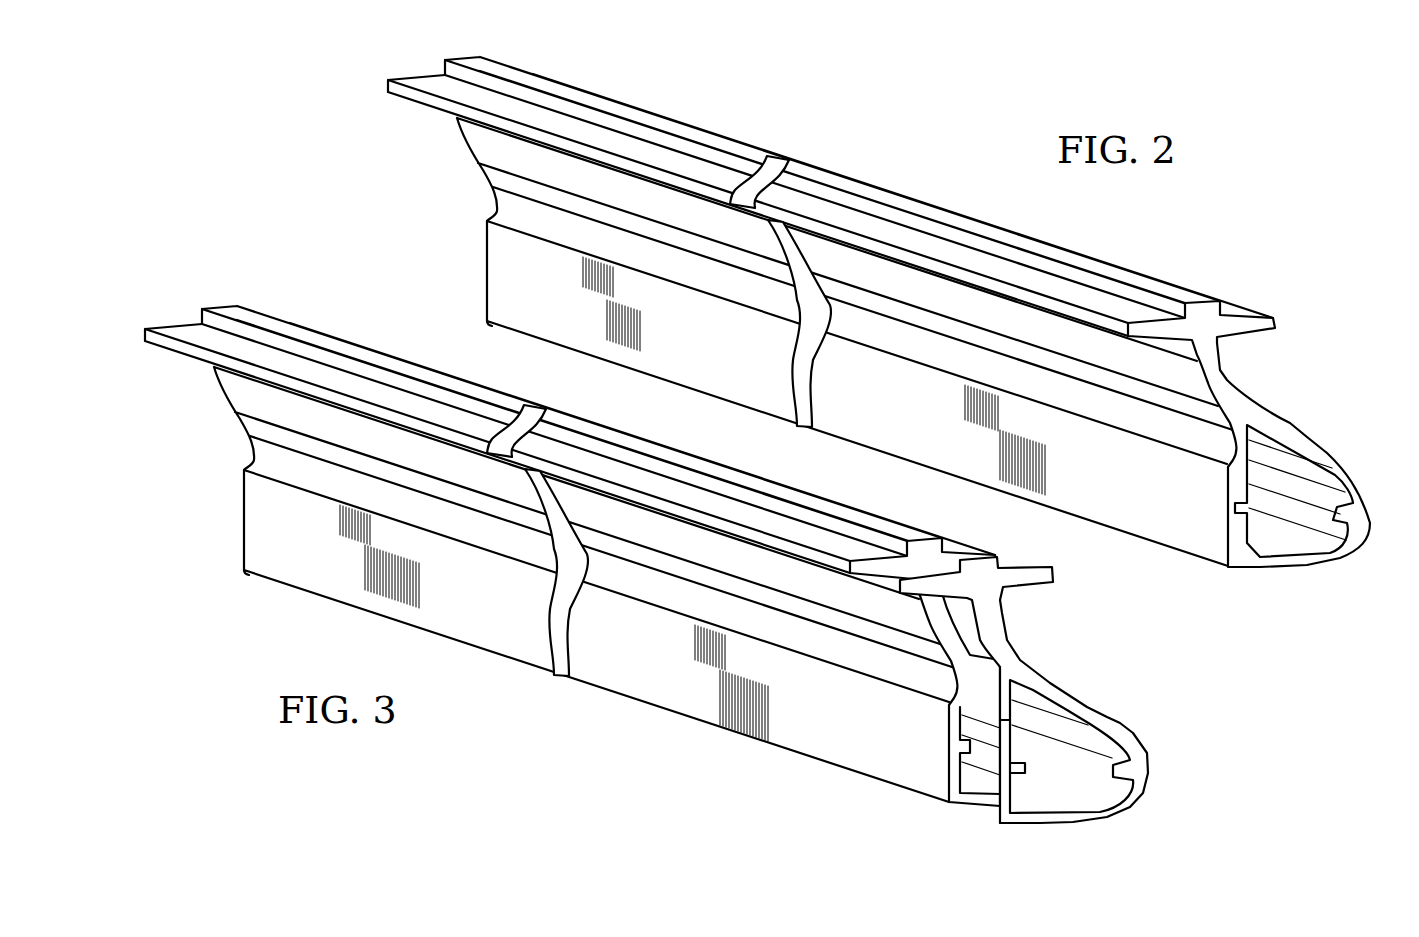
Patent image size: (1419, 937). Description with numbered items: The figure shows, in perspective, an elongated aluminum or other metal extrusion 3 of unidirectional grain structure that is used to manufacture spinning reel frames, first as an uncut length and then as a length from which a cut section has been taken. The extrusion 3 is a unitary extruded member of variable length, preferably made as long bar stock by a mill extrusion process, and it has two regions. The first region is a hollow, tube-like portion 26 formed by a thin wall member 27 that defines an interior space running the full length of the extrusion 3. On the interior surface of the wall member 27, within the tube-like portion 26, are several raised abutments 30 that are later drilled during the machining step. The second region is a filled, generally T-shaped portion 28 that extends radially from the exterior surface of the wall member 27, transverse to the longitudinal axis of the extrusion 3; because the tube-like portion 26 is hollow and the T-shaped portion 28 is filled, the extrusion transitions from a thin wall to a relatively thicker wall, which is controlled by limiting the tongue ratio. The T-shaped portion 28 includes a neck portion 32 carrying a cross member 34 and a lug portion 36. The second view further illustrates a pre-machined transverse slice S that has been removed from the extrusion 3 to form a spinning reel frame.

In FIG. 2, the extrusion 3 is at (891, 354).
In FIG. 3, the extrusion 3 is at (687, 580).
In FIG. 2, the tube-like portion 26 is at (1285, 538).
In FIG. 3, the tube-like portion 26 is at (1096, 822).
In FIG. 2, the wall member 27 is at (1268, 568).
In FIG. 2, the T-shaped portion 28 is at (1222, 373).
In FIG. 3, the T-shaped portion 28 is at (1022, 661).
In FIG. 2, the raised abutments 30 is at (1313, 457).
In FIG. 3, the raised abutments 30 is at (1097, 714).
In FIG. 2, the neck portion 32 is at (1248, 398).
In FIG. 3, the neck portion 32 is at (1003, 627).
In FIG. 2, the cross member 34 is at (1277, 323).
In FIG. 3, the cross member 34 is at (865, 560).
In FIG. 2, the lug portion 36 is at (935, 213).
In FIG. 3, the lug portion 36 is at (778, 492).
In FIG. 3, the pre-machined transverse slice S is at (1002, 825).